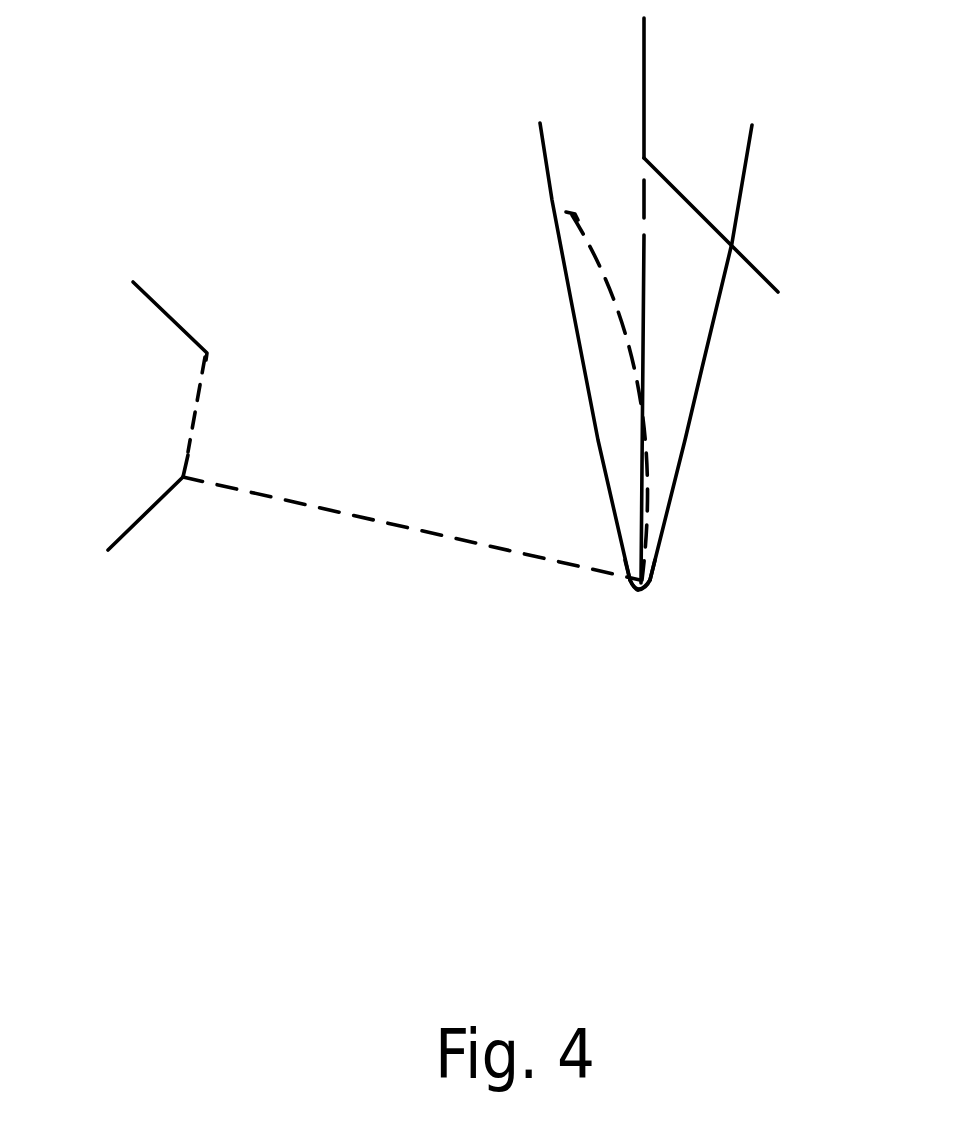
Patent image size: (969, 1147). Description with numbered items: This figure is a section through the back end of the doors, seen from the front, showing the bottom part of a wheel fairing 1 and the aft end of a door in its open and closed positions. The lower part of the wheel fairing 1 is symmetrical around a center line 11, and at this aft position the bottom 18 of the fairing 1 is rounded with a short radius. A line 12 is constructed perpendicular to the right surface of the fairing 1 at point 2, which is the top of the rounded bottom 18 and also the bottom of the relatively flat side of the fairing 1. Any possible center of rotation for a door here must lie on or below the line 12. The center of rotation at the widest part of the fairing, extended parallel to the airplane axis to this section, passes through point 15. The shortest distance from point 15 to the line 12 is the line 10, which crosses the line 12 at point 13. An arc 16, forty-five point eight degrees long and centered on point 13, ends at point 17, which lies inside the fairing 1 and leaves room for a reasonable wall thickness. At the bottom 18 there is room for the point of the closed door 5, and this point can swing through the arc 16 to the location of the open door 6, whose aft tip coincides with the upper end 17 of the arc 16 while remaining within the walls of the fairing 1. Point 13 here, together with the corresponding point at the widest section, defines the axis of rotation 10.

The wheel fairing 1 is at (540, 155).
The point at top of rounded bottom 2 is at (650, 580).
The closed door 5 is at (648, 585).
The open door 6 is at (567, 213).
The axis of rotation line 10 is at (195, 418).
The center line 11 is at (746, 261).
The perpendicular line 12 is at (420, 533).
The center of rotation 13 is at (108, 549).
The projected center of rotation point 15 is at (133, 285).
The arc 16 is at (642, 392).
The upper end of arc 17 is at (570, 213).
The rounded bottom 18 is at (633, 588).